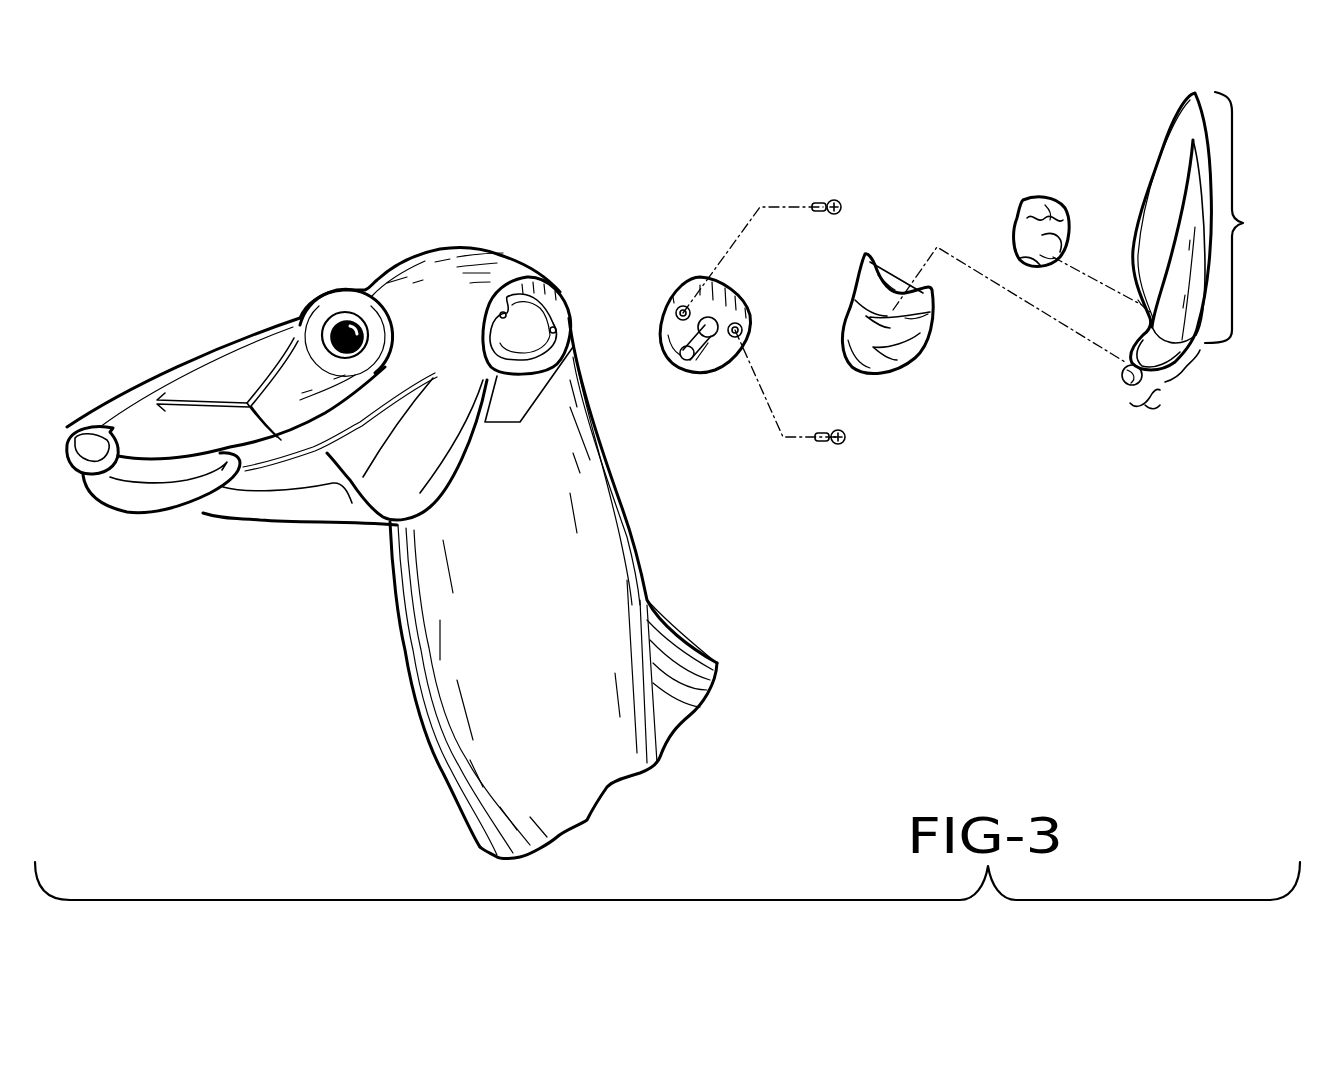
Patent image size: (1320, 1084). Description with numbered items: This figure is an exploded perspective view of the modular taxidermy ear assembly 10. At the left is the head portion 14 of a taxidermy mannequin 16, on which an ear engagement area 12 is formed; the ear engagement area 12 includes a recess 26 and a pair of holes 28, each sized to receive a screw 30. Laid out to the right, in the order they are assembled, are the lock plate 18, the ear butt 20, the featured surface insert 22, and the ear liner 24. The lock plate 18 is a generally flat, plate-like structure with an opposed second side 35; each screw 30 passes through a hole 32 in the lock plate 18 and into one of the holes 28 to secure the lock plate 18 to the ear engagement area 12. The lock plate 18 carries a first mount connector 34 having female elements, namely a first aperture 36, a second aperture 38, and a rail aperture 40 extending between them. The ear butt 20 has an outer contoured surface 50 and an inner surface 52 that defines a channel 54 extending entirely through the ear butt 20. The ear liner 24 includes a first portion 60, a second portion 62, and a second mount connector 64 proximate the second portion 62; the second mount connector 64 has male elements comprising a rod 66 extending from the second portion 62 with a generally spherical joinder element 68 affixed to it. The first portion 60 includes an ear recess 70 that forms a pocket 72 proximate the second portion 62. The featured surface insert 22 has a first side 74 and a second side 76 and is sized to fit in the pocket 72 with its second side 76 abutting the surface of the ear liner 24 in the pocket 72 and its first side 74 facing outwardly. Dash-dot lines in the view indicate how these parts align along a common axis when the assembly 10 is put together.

The modular taxidermy ear assembly 10 is at (567, 190).
The ear engagement area 12 is at (514, 290).
The head portion 14 is at (223, 326).
The taxidermy mannequin 16 is at (390, 708).
The lock plate 18 is at (725, 327).
The ear butt 20 is at (963, 334).
The featured surface insert 22 is at (1030, 241).
The ear liner 24 is at (1098, 235).
The recess 26 is at (535, 303).
The holes 28 is at (500, 314).
The screw 30 is at (830, 202).
The hole 32 is at (677, 312).
The first mount connector 34 is at (700, 372).
The second side 35 is at (672, 342).
The first aperture 36 is at (713, 320).
The second aperture 38 is at (684, 357).
The rail aperture 40 is at (702, 341).
The outer contoured surface 50 is at (873, 363).
The inner surface 52 is at (887, 293).
The channel 54 is at (910, 320).
The first portion 60 is at (1250, 230).
The second portion 62 is at (1198, 387).
The second mount connector 64 is at (1155, 410).
The rod 66 is at (1122, 374).
The joinder element 68 is at (1128, 394).
The ear recess 70 is at (1168, 187).
The pocket 72 is at (1143, 305).
The first side 74 is at (1050, 207).
The second side 76 is at (1045, 258).